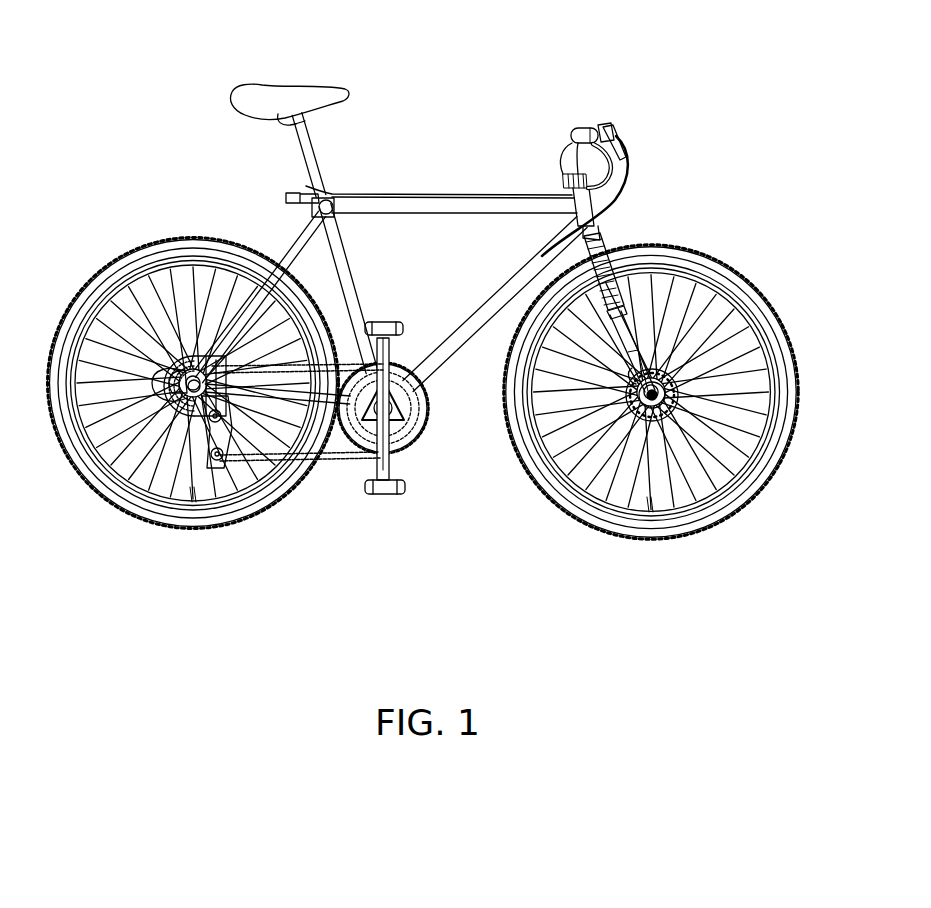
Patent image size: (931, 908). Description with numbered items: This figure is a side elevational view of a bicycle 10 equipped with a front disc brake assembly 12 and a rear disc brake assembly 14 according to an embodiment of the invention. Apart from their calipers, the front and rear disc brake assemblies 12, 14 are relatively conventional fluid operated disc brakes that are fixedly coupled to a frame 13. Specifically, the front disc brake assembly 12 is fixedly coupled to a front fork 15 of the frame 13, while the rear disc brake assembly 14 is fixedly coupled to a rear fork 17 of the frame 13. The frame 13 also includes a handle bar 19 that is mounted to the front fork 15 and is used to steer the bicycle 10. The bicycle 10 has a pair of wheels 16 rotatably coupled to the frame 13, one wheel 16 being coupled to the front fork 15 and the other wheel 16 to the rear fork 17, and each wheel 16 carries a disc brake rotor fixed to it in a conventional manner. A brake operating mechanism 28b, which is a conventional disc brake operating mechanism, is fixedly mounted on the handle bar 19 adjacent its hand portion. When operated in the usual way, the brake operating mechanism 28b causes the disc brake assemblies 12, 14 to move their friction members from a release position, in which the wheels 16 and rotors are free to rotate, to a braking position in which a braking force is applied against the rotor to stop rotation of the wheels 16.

The bicycle 10 is at (423, 271).
The front disc brake assembly 12 is at (697, 377).
The frame 13 is at (433, 221).
The rear disc brake assembly 14 is at (209, 334).
The front fork 15 is at (633, 320).
The wheel 16 is at (99, 266).
The rear fork 17 is at (208, 325).
The handle bar 19 is at (598, 127).
The brake operating mechanism 28b is at (603, 115).